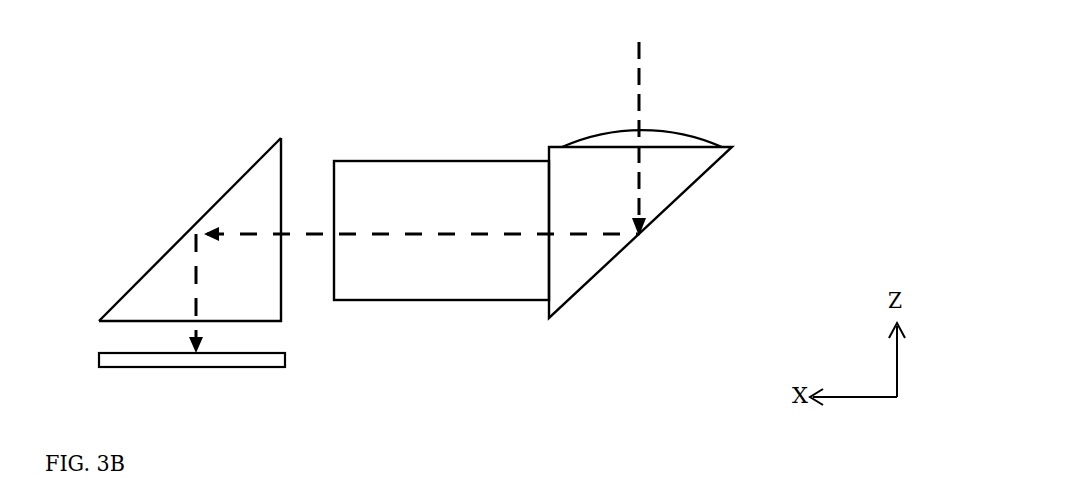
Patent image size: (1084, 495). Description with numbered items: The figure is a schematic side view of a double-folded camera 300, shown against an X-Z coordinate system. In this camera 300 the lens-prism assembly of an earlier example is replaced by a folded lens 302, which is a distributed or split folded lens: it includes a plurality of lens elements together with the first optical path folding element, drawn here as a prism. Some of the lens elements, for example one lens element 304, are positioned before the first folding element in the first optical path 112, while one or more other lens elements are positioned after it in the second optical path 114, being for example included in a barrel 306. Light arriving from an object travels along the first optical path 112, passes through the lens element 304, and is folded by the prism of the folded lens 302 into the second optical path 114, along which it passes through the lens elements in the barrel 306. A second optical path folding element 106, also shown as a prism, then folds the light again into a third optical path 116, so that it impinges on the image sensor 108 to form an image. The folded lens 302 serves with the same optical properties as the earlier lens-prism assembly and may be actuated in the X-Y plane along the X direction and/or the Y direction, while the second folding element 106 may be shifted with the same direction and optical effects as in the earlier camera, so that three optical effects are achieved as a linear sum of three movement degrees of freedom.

The double-folded camera 300 is at (452, 53).
The folded lens 302 is at (535, 219).
The lens element 304 is at (622, 137).
The barrel 306 is at (438, 168).
The second OPFE 106 is at (171, 229).
The image sensor 108 is at (237, 362).
The first optical path 112 is at (640, 70).
The second optical path 114 is at (287, 233).
The third optical path 116 is at (193, 253).